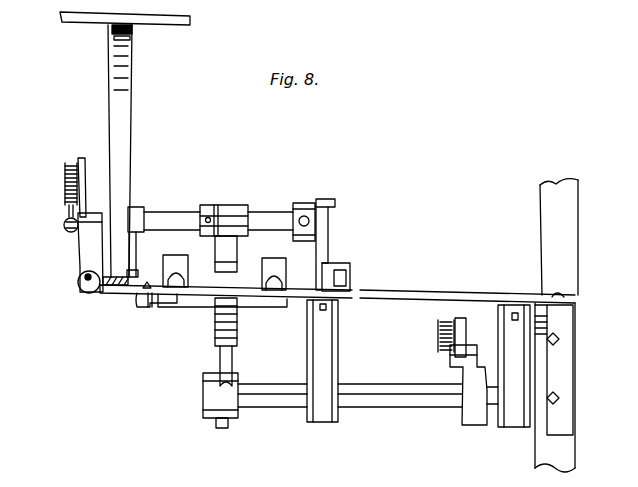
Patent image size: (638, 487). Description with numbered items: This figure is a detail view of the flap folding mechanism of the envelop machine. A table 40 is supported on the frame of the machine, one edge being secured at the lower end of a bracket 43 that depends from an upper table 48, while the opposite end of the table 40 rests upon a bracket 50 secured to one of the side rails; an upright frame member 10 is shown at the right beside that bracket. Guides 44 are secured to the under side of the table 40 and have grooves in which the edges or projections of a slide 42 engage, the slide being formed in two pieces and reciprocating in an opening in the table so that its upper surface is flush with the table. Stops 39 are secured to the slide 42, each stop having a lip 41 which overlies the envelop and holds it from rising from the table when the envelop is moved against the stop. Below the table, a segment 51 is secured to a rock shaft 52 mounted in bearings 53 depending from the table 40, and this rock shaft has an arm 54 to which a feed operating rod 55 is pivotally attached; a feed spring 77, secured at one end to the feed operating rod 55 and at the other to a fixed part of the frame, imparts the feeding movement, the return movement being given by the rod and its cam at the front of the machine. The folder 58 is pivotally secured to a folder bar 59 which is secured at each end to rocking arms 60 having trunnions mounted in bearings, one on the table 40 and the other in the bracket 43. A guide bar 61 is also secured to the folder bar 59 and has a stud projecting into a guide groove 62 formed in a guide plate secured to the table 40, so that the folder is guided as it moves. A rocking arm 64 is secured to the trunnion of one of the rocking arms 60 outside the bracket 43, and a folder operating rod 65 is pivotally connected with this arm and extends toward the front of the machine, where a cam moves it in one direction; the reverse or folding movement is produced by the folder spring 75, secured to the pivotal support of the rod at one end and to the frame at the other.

The table 48 is at (72, 22).
The bracket 43 is at (122, 170).
The folder operating rod 65 is at (78, 166).
The folder spring 75 is at (65, 190).
The rocking arm 64 is at (86, 248).
The table 40 is at (376, 296).
The guides 44 is at (138, 305).
The slide 42 is at (176, 302).
The folder bar 59 is at (262, 213).
The guide bar 61 is at (305, 203).
The guide groove 62 is at (335, 204).
The rocking arms 60 is at (326, 239).
The folder 58 is at (228, 266).
The lip 41 is at (264, 266).
The stop 39 is at (286, 280).
The post 10 is at (546, 246).
The bracket 50 is at (570, 332).
The segment 51 is at (237, 328).
The rock shaft 52 is at (262, 382).
The bearings 53 is at (326, 388).
The feed spring 77 is at (438, 338).
The feed operating rod 55 is at (466, 334).
The arm 54 is at (463, 373).